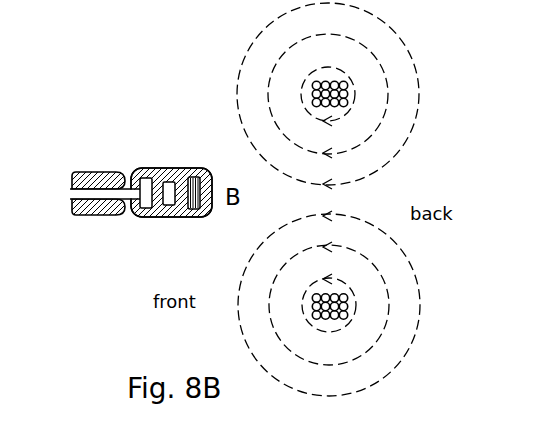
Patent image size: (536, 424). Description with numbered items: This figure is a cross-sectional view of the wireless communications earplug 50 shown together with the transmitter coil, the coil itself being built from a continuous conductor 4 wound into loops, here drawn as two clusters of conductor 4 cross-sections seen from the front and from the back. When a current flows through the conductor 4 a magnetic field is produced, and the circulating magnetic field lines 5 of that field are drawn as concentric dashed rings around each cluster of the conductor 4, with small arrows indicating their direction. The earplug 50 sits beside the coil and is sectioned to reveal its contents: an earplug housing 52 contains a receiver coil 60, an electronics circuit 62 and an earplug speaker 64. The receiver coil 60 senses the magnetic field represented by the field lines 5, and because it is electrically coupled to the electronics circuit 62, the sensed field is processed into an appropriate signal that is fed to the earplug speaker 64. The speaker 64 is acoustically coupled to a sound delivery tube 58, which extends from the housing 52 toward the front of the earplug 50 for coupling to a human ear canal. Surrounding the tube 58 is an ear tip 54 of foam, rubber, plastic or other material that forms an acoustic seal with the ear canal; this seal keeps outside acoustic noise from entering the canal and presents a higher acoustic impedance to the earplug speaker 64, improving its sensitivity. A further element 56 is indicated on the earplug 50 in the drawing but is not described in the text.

The continuous conductor 4 is at (343, 319).
The circulating magnetic field lines 5 is at (379, 172).
The wireless communications earplug 50 is at (127, 193).
The earplug housing 52 is at (203, 217).
The ear tip 54 is at (112, 171).
The stem 56 is at (69, 193).
The sound delivery tube 58 is at (93, 200).
The receiver coil 60 is at (203, 172).
The electronics circuit 62 is at (173, 176).
The earplug speaker 64 is at (145, 216).